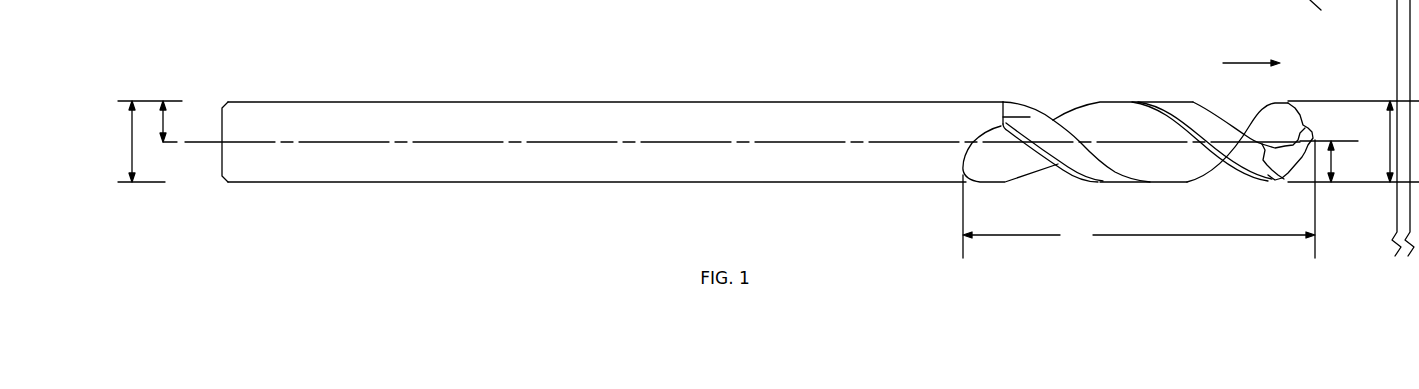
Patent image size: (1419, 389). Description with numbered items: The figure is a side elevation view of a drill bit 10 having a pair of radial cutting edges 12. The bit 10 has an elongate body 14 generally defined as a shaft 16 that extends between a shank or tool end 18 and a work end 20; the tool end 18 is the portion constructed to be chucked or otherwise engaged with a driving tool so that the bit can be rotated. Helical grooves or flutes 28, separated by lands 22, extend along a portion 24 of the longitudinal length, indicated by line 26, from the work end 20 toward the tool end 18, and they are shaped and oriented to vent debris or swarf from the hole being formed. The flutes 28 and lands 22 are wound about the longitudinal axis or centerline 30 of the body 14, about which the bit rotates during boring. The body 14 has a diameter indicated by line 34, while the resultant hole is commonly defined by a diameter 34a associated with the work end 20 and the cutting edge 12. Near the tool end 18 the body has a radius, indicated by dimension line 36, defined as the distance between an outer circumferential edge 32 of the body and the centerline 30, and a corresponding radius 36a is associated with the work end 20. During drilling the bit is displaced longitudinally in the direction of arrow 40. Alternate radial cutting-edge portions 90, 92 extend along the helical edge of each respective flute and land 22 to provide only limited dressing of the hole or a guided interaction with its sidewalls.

The bit 10 is at (794, 56).
The cutting edge 12 is at (1333, 100).
The elongate body 14 is at (460, 172).
The shaft 16 is at (555, 136).
The tool end 18 is at (221, 127).
The work end 20 is at (1318, 140).
The land 22 is at (1198, 107).
The portion 24 is at (1139, 47).
The longitudinal length line 26 is at (1139, 199).
The flute 28 is at (1086, 122).
The centerline 30 is at (1334, 163).
The outer circumferential edge 32 is at (960, 100).
The body diameter 34 is at (132, 142).
The shank radius 36 is at (163, 121).
The work end diameter 34a is at (1390, 145).
The work end radius 36a is at (1341, 144).
The arrow 40 is at (1247, 62).
The radial cutting-edge portion 90 is at (1233, 167).
The radial cutting-edge portion 92 is at (1083, 179).